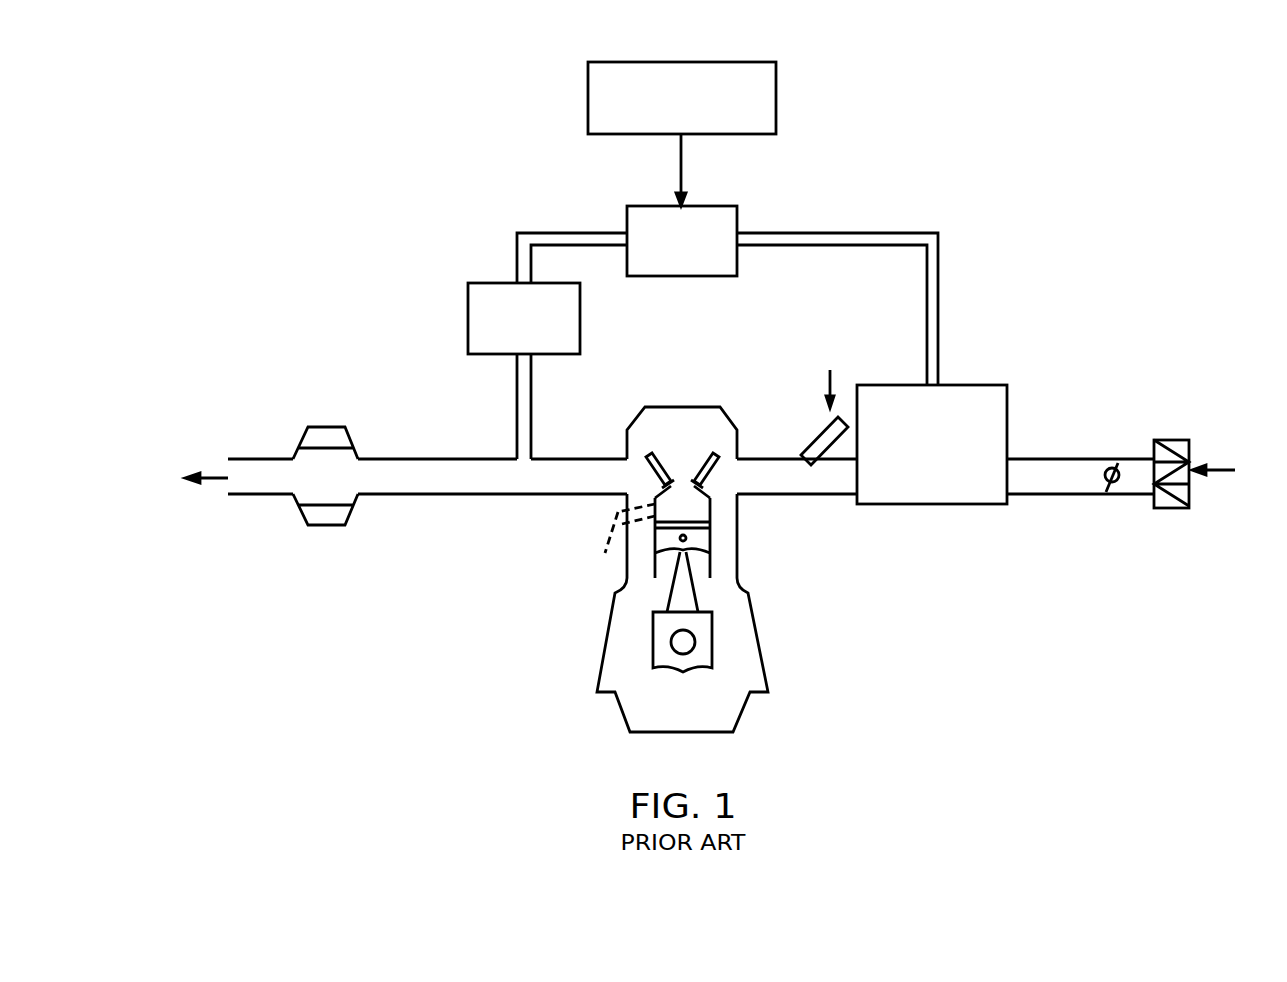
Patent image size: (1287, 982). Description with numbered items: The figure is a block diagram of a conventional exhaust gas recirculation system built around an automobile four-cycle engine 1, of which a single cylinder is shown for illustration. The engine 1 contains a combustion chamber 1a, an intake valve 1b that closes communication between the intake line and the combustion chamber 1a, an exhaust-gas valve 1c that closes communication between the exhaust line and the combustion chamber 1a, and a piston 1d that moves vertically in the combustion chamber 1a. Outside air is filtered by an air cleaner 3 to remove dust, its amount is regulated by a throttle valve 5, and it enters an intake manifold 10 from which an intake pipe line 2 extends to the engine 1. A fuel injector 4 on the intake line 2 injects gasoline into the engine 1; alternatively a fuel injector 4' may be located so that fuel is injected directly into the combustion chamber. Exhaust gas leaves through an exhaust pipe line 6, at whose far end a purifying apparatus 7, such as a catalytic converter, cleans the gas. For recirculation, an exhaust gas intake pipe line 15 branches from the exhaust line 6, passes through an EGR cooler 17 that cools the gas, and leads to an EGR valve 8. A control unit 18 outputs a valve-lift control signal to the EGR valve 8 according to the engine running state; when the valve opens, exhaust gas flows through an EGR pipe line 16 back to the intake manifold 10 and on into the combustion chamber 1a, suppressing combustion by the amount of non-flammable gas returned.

The four-cycle engine 1 is at (792, 674).
The combustion chamber 1a is at (681, 497).
The intake valve 1b is at (712, 477).
The exhaust-gas valve 1c is at (650, 465).
The piston 1d is at (700, 540).
The intake pipe line 2 is at (783, 457).
The air cleaner 3 is at (1165, 510).
The fuel injector 4 is at (823, 404).
The fuel injector 4' is at (626, 542).
The throttle valve 5 is at (1108, 462).
The exhaust pipe line 6 is at (442, 494).
The purifying apparatus 7 is at (323, 506).
The EGR valve 8 is at (715, 298).
The intake manifold 10 is at (997, 506).
The exhaust gas intake pipe line 15 is at (517, 418).
The EGR pipe line 16 is at (938, 252).
The EGR cooler 17 is at (468, 325).
The control unit 18 is at (681, 62).